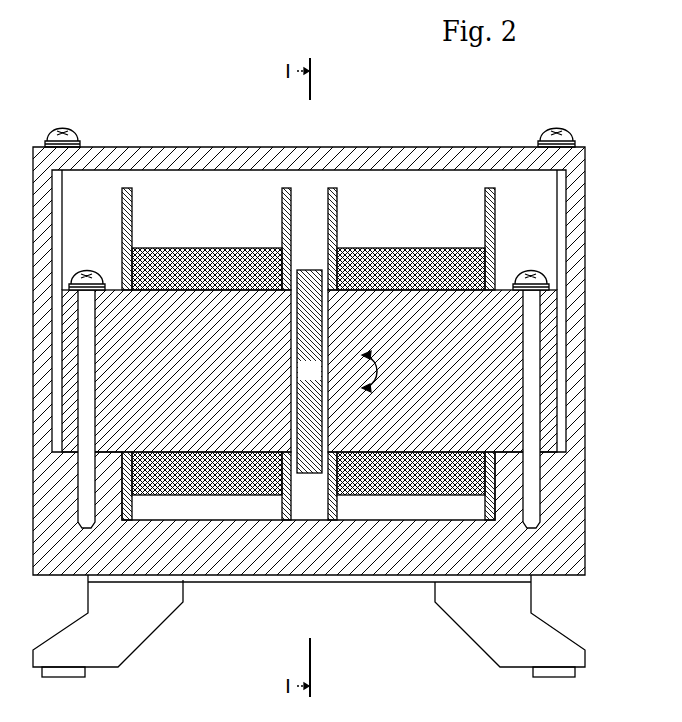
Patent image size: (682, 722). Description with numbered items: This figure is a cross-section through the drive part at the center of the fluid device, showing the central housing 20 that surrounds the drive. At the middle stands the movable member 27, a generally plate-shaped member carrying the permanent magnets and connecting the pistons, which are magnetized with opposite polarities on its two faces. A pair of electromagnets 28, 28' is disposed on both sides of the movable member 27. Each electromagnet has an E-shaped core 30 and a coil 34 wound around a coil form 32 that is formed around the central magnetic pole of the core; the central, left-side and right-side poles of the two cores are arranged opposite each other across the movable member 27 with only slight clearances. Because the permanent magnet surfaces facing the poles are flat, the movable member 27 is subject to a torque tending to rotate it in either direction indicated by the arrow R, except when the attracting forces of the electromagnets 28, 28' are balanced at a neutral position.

The central housing 20 is at (575, 558).
The movable member 27 is at (319, 270).
The electromagnet 28 is at (308, 306).
The electromagnet 28' is at (375, 140).
The E-shaped core 30 is at (117, 293).
The coil form 32 is at (133, 198).
The coil 34 is at (232, 250).
The arrow indicating rotation direction R is at (392, 354).